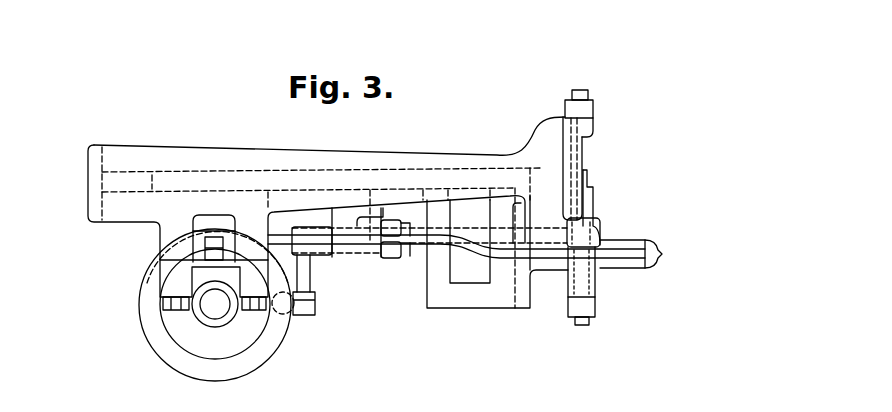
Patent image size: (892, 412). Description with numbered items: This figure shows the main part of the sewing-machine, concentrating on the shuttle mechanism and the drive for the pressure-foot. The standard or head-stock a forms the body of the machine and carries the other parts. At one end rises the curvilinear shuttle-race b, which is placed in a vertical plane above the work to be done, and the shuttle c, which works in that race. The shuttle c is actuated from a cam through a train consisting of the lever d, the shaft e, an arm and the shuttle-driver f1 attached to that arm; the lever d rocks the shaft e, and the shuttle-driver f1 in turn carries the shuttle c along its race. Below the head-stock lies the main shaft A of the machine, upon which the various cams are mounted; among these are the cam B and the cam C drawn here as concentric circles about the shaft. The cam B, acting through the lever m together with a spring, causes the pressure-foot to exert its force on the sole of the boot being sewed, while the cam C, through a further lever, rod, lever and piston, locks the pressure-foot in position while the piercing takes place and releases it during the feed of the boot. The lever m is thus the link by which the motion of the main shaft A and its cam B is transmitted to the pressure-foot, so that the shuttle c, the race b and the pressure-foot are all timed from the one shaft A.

The standard or head-stock a is at (326, 212).
The curvilinear shuttle-race b is at (583, 150).
The shuttle c is at (597, 291).
The lever d is at (310, 273).
The shaft e is at (418, 253).
The shuttle-driver f1 is at (594, 185).
The lever m is at (645, 270).
The main shaft A is at (214, 293).
The cam B is at (215, 305).
The cam C is at (215, 306).